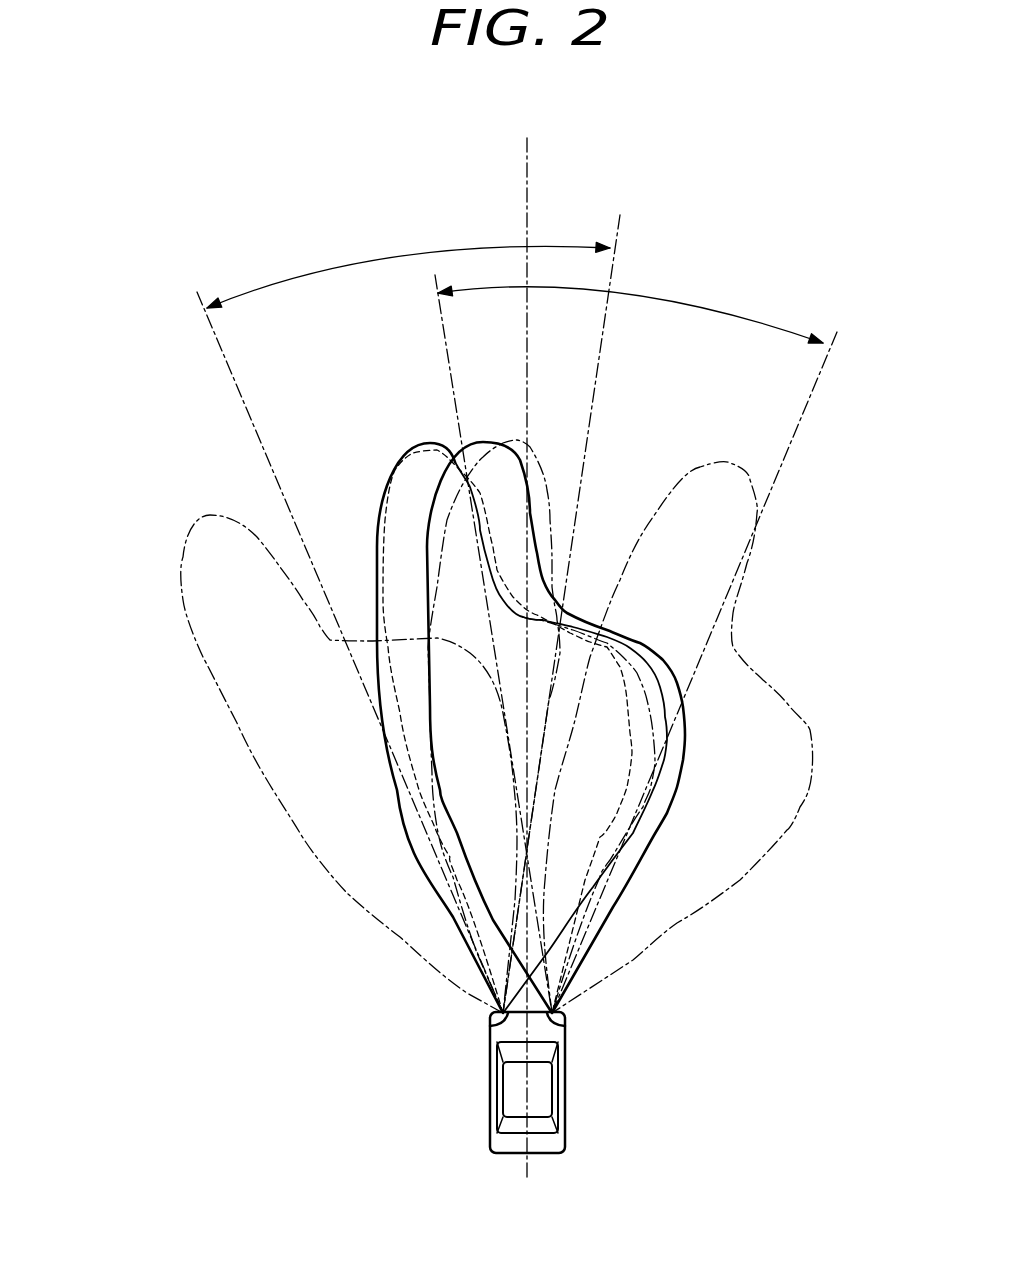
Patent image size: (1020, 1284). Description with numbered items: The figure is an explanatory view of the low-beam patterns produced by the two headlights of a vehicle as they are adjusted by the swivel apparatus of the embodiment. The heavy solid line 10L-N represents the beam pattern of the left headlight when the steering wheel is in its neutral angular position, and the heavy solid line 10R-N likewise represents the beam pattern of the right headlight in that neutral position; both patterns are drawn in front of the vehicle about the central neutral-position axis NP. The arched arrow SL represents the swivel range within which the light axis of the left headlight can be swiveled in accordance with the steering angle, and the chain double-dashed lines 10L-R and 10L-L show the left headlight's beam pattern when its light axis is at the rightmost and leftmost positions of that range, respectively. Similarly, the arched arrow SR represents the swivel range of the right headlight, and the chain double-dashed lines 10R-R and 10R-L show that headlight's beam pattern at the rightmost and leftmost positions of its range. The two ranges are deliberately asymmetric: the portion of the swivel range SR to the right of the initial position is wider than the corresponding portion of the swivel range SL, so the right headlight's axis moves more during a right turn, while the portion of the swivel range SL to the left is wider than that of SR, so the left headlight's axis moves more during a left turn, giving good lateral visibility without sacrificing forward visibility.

The beam pattern of headlight 10L in neutral position 10L-N is at (430, 443).
The beam pattern of headlight 10R in neutral position 10R-N is at (517, 447).
The beam pattern of headlight 10L in leftmost position 10L-L is at (197, 643).
The beam pattern of headlight 10R in rightmost position 10R-R is at (755, 551).
The beam pattern of headlight 10L in rightmost position 10L-R is at (540, 460).
The beam pattern of headlight 10R in leftmost position 10R-L is at (443, 450).
The swivel range of headlight 10L SL is at (373, 260).
The swivel range of headlight 10R SR is at (712, 307).
The neutral position axis NP is at (522, 640).